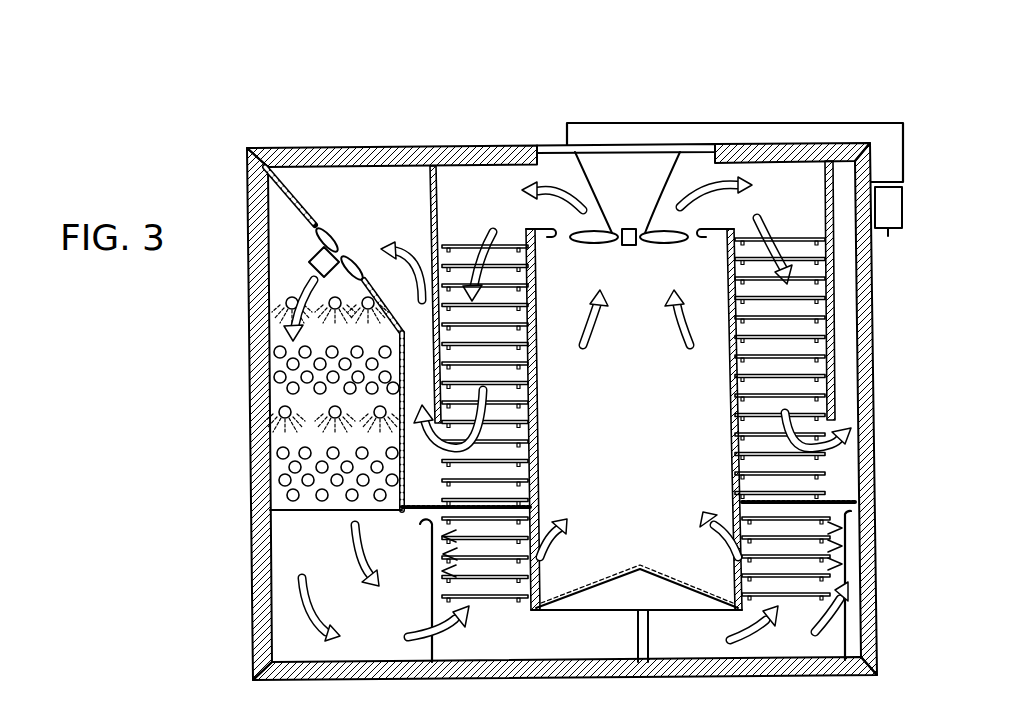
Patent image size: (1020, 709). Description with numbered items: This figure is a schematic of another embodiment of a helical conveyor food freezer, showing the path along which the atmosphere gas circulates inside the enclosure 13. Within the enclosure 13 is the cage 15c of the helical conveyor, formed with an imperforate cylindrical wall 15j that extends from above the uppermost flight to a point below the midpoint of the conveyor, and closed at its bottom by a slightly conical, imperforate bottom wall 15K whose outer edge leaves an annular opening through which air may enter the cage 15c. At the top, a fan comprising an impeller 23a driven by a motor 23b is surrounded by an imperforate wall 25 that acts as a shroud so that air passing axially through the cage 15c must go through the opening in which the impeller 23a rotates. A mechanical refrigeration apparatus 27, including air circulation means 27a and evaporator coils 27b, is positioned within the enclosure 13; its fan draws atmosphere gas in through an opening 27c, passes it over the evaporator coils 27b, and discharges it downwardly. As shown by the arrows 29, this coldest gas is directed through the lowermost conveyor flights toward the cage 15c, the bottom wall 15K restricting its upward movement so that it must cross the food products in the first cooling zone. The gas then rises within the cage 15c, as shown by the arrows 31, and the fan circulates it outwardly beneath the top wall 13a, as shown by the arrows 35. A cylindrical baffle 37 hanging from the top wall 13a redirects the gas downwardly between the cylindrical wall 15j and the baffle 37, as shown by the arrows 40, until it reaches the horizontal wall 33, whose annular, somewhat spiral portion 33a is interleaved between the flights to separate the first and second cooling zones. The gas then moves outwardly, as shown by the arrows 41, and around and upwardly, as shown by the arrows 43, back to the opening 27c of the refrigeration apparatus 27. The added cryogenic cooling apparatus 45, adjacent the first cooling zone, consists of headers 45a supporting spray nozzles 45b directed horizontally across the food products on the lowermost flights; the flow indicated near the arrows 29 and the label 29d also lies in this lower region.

The enclosure 13 is at (285, 148).
The top wall 13a is at (500, 113).
The cage 15c is at (700, 392).
The cylindrical wall 15j is at (541, 396).
The bottom wall 15K is at (592, 603).
The impeller 23a is at (603, 247).
The motor 23b is at (894, 230).
The imperforate wall 25 is at (552, 229).
The mechanical refrigeration apparatus 27 is at (318, 199).
The air circulation means 27a is at (342, 233).
The evaporator coils 27b is at (307, 511).
The opening 27c is at (320, 230).
The arrows 29 is at (378, 586).
The air flow 29d is at (380, 554).
The arrows 31 is at (675, 322).
The horizontal wall 33 is at (421, 504).
The annular portion 33a is at (497, 502).
The arrows 35 is at (550, 183).
The cylindrical baffle 37 is at (428, 172).
The arrows 40 is at (537, 273).
The arrows 41 is at (417, 400).
The arrows 43 is at (410, 238).
The cryogenic cooling apparatus 45 is at (418, 572).
The headers 45a is at (841, 634).
The spray nozzles 45b is at (428, 524).